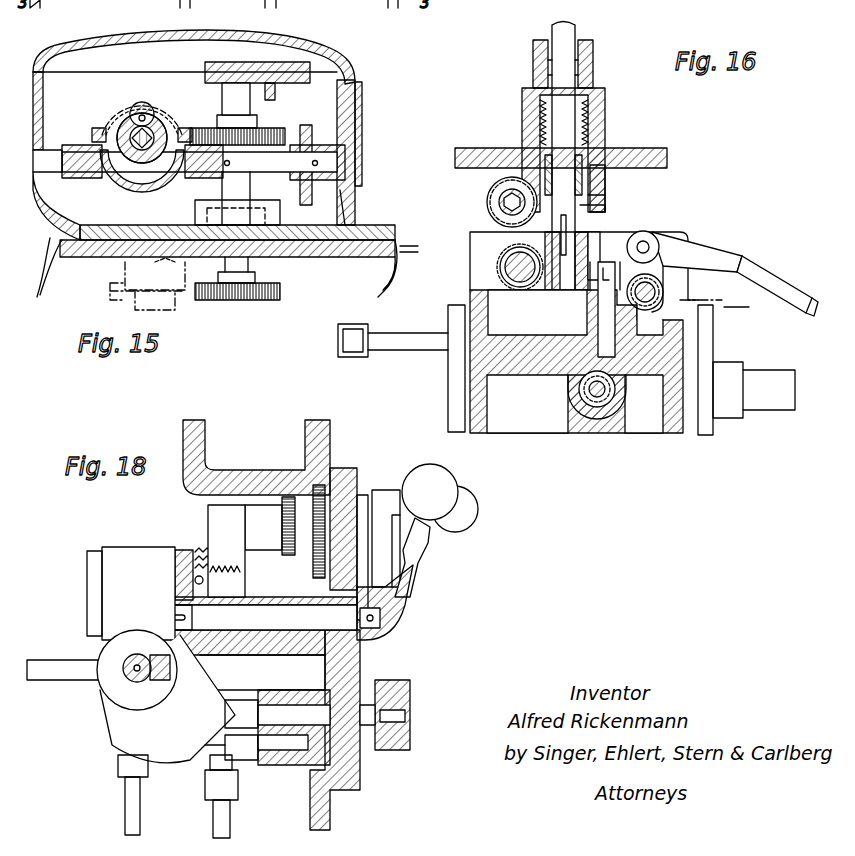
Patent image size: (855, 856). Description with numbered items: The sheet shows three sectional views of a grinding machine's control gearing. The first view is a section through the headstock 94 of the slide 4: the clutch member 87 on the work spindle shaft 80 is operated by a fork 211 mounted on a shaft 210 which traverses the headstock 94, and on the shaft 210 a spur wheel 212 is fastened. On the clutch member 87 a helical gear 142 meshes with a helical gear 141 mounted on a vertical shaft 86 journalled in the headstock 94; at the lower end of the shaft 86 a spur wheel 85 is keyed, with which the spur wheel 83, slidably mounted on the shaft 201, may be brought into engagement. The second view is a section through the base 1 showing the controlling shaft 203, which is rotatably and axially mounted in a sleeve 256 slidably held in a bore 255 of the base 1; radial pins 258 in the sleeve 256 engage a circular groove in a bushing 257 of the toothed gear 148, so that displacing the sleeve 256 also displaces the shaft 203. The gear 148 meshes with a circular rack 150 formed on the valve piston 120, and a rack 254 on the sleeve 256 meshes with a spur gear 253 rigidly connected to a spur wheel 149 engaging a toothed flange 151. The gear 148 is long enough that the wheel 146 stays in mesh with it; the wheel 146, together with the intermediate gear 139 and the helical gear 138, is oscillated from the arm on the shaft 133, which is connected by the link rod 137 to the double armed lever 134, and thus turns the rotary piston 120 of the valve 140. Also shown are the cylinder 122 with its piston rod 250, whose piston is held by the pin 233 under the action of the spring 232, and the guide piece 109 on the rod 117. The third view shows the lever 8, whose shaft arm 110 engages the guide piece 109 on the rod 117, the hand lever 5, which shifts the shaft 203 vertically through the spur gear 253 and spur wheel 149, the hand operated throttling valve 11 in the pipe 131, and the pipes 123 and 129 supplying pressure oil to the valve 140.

In FIG. 16, the base 1 is at (650, 152).
In FIG. 18, the base 1 is at (322, 448).
In FIG. 15, the slide 4 is at (385, 281).
In FIG. 18, the hand lever 5 is at (383, 494).
In FIG. 18, the lever 8 is at (420, 560).
In FIG. 18, the throttling valve 11 is at (410, 700).
In FIG. 15, the shaft 80 is at (152, 130).
In FIG. 15, the spur wheel 83 is at (110, 292).
In FIG. 15, the spur wheel 85 is at (280, 294).
In FIG. 15, the vertical shaft 86 is at (238, 95).
In FIG. 15, the clutch member 87 is at (143, 116).
In FIG. 15, the headstock 94 is at (350, 202).
In FIG. 16, the guide piece 109 is at (338, 345).
In FIG. 18, the guide piece 109 is at (125, 678).
In FIG. 18, the arm 110 is at (155, 682).
In FIG. 16, the rod 117 is at (410, 330).
In FIG. 18, the rod 117 is at (125, 665).
In FIG. 16, the valve piston 120 is at (510, 250).
In FIG. 16, the cylinder 122 is at (705, 436).
In FIG. 18, the pipe 123 is at (213, 820).
In FIG. 18, the pipe 129 is at (125, 803).
In FIG. 18, the pipe 131 is at (228, 712).
In FIG. 16, the shaft 133 is at (700, 262).
In FIG. 16, the double armed lever 134 is at (670, 262).
In FIG. 16, the link rod 137 is at (785, 295).
In FIG. 16, the helical gear 138 is at (662, 300).
In FIG. 16, the intermediate gear 139 is at (592, 295).
In FIG. 18, the valve 140 is at (145, 560).
In FIG. 15, the helical gear 141 is at (275, 130).
In FIG. 15, the helical gear 142 is at (112, 112).
In FIG. 16, the wheel 146 is at (648, 242).
In FIG. 16, the toothed gear 148 is at (600, 240).
In FIG. 16, the spur wheel 149 is at (487, 205).
In FIG. 18, the spur wheel 149 is at (340, 478).
In FIG. 16, the circular rack 150 is at (507, 276).
In FIG. 18, the circular rack 150 is at (228, 572).
In FIG. 16, the toothed flange 151 is at (500, 262).
In FIG. 15, the shaft 201 is at (170, 308).
In FIG. 16, the shaft 203 is at (578, 33).
In FIG. 15, the shaft 210 is at (337, 164).
In FIG. 15, the fork 211 is at (160, 185).
In FIG. 15, the spur wheel 212 is at (312, 130).
In FIG. 16, the spring 232 is at (594, 407).
In FIG. 16, the pin 233 is at (603, 407).
In FIG. 16, the piston rod 250 is at (790, 412).
In FIG. 16, the spur gear 253 is at (490, 190).
In FIG. 18, the spur gear 253 is at (288, 495).
In FIG. 16, the rack 254 is at (537, 175).
In FIG. 16, the bore 255 is at (585, 120).
In FIG. 16, the sleeve 256 is at (605, 184).
In FIG. 16, the bushing 257 is at (606, 200).
In FIG. 16, the radial pins 258 is at (606, 212).